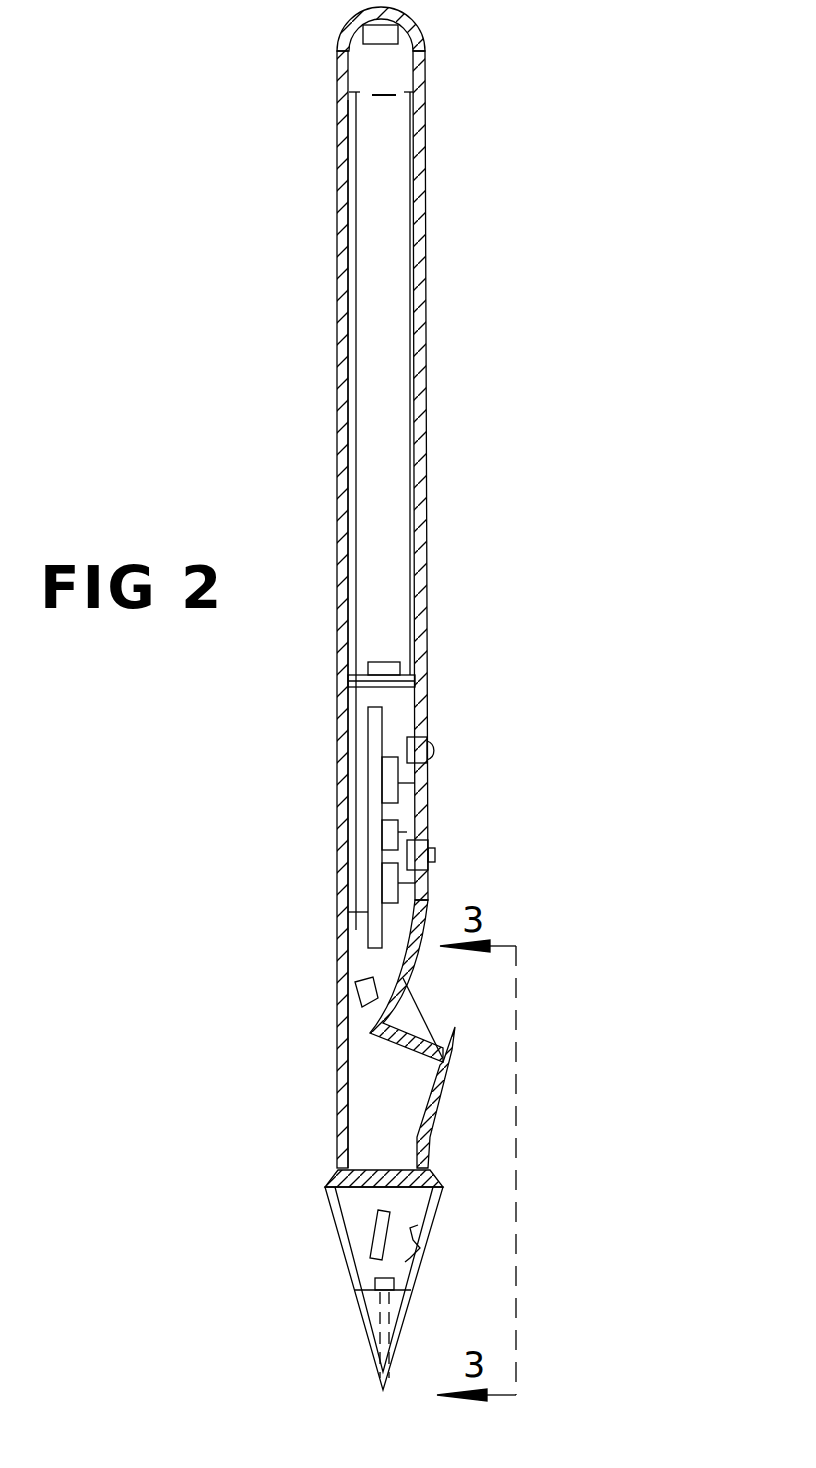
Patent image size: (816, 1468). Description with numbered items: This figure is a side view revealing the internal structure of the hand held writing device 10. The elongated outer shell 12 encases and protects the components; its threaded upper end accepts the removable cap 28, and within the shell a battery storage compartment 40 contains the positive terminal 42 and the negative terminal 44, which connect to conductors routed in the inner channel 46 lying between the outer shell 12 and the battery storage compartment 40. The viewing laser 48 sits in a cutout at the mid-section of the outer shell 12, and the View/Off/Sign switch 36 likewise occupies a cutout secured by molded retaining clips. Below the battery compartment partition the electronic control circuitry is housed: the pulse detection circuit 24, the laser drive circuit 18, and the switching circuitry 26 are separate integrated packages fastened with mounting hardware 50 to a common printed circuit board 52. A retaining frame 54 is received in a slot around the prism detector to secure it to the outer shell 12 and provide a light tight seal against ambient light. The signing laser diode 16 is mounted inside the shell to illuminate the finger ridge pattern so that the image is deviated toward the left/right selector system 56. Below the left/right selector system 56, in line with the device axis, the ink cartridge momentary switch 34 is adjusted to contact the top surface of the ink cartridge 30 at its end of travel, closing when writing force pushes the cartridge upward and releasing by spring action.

The hand held writing device 10 is at (470, 538).
The outer shell 12 is at (338, 243).
The signing laser diode 16 is at (365, 1005).
The laser drive circuit 18 is at (428, 880).
The pulse detection circuit 24 is at (428, 775).
The switching circuitry 26 is at (428, 828).
The removable cap 28 is at (337, 55).
The ink cartridge 30 is at (378, 1318).
The ink cartridge momentary switch 34 is at (373, 1283).
The View/Off/Sign switch 36 is at (440, 855).
The battery storage compartment 40 is at (380, 390).
The positive terminal 42 is at (385, 42).
The negative terminal 44 is at (428, 663).
The inner channel 46 is at (352, 520).
The viewing laser 48 is at (440, 750).
The mounting hardware 50 is at (368, 744).
The printed circuit board 52 is at (383, 815).
The retaining frame 54 is at (440, 1050).
The left/right selector system 56 is at (300, 1218).